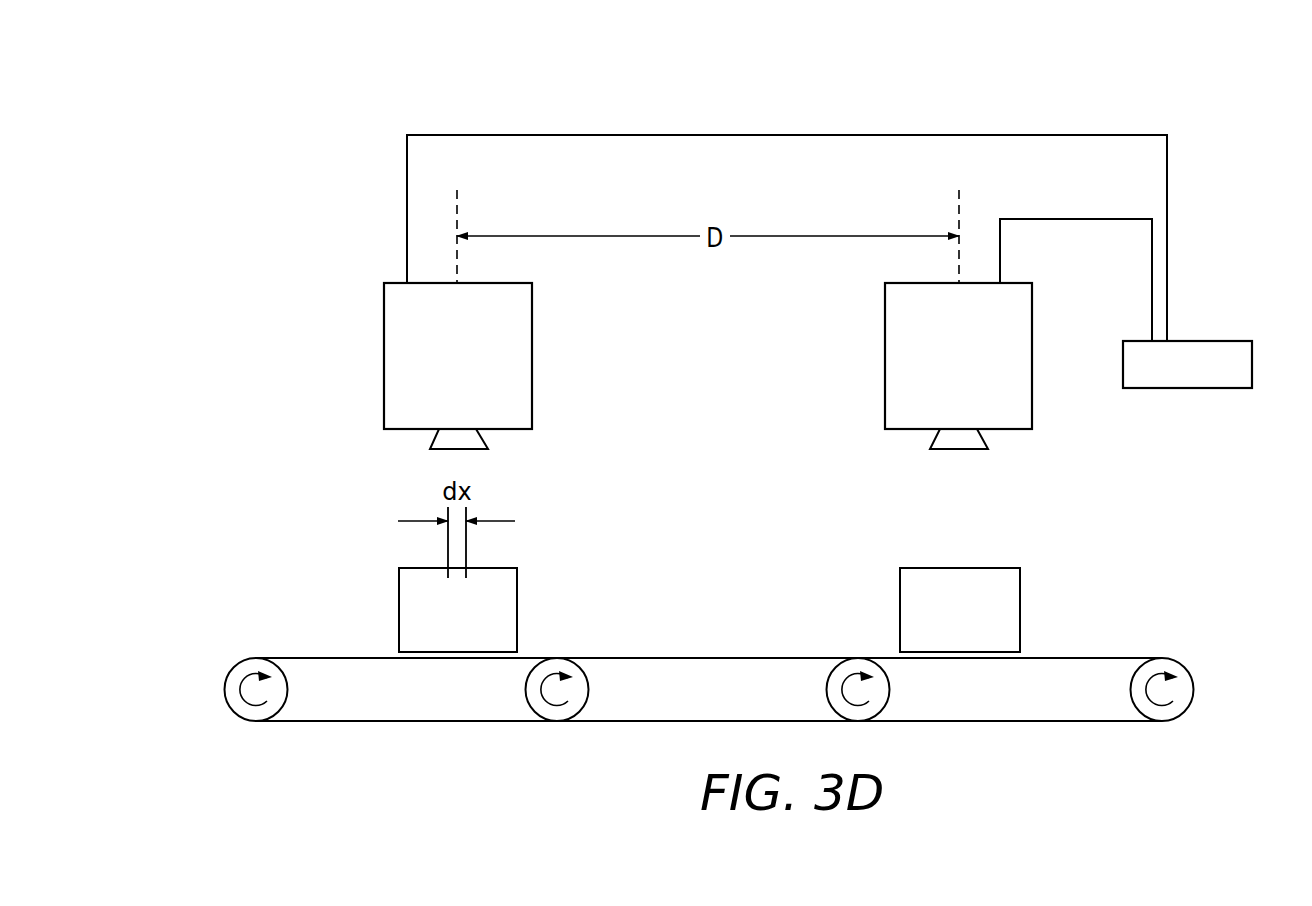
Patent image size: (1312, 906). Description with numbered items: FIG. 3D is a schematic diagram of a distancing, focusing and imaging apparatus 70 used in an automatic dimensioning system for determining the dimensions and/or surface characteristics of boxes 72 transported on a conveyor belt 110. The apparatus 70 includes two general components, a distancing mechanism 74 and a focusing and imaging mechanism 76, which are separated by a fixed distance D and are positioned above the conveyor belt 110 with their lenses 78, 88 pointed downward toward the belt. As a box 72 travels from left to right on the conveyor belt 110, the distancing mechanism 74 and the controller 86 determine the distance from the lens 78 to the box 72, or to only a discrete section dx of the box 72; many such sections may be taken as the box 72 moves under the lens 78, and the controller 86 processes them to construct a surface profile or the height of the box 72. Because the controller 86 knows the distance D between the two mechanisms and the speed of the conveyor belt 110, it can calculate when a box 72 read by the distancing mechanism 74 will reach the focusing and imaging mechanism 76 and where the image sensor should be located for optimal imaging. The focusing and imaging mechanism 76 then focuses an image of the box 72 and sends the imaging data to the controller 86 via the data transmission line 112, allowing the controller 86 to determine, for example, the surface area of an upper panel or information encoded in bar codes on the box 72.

The apparatus 70 is at (376, 76).
The box 72 is at (517, 612).
The distancing mechanism 74 is at (384, 355).
The focusing and imaging mechanism 76 is at (885, 306).
The lens 78 is at (418, 437).
The controller 86 is at (1185, 390).
The lens 88 is at (990, 437).
The conveyor belt 110 is at (226, 682).
The data transmission line 112 is at (1077, 221).